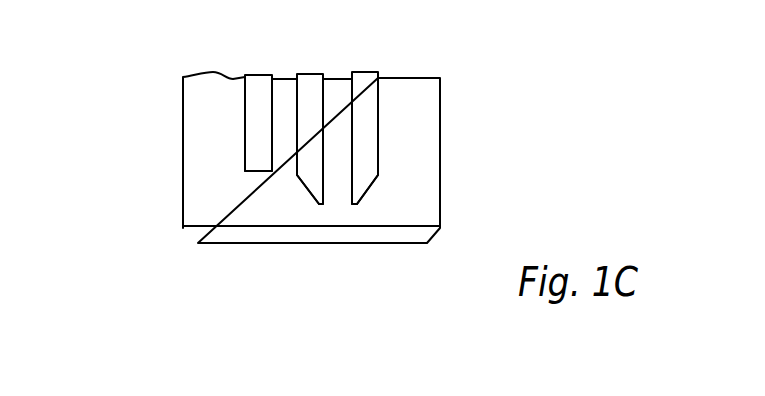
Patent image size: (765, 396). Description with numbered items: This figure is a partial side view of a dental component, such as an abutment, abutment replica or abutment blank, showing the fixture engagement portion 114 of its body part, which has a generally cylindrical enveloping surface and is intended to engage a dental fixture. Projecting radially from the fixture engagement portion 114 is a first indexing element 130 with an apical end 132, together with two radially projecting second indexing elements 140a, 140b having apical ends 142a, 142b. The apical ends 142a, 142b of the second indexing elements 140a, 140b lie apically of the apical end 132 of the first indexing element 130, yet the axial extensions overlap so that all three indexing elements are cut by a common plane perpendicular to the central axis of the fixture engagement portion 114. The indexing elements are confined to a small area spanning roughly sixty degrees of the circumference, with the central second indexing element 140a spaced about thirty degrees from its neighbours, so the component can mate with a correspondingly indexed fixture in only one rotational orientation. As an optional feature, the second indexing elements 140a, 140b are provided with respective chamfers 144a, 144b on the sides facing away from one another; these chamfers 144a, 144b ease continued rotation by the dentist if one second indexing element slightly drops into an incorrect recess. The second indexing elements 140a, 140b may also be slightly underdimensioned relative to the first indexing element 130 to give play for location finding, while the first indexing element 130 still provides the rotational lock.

The fixture engagement portion 114 is at (428, 105).
The first indexing element 130 is at (260, 108).
The apical end 132 is at (257, 171).
The second indexing element 140a is at (307, 145).
The second indexing element 140b is at (362, 145).
The apical end 142a is at (320, 205).
The apical end 142b is at (356, 206).
The chamfer 144a is at (307, 190).
The chamfer 144b is at (372, 193).